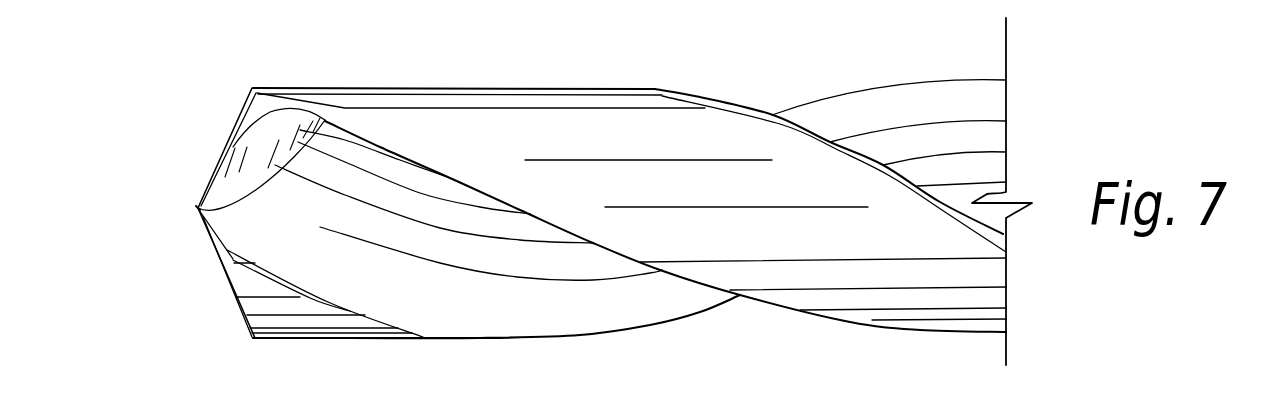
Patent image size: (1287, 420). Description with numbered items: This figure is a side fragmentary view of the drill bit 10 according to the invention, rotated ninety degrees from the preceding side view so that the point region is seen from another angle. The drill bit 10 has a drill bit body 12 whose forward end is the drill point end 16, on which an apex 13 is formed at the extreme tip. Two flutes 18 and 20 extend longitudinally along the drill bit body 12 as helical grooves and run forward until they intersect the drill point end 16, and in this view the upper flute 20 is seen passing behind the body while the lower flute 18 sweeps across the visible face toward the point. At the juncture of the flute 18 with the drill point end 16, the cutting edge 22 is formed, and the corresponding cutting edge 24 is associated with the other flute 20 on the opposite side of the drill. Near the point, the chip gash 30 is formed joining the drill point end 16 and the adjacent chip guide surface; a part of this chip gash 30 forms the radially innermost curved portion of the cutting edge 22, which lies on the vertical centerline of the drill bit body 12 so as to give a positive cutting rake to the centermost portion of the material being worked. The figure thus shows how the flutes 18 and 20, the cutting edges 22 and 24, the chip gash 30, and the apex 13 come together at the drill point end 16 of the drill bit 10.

The drill bit 10 is at (408, 86).
The drill bit body 12 is at (483, 87).
The apex 13 is at (197, 208).
The drill point end 16 is at (228, 136).
The flute 18 is at (506, 330).
The flute 20 is at (910, 103).
The cutting edge 22 is at (280, 285).
The cutting edge 24 is at (708, 97).
The chip gash 30 is at (243, 174).